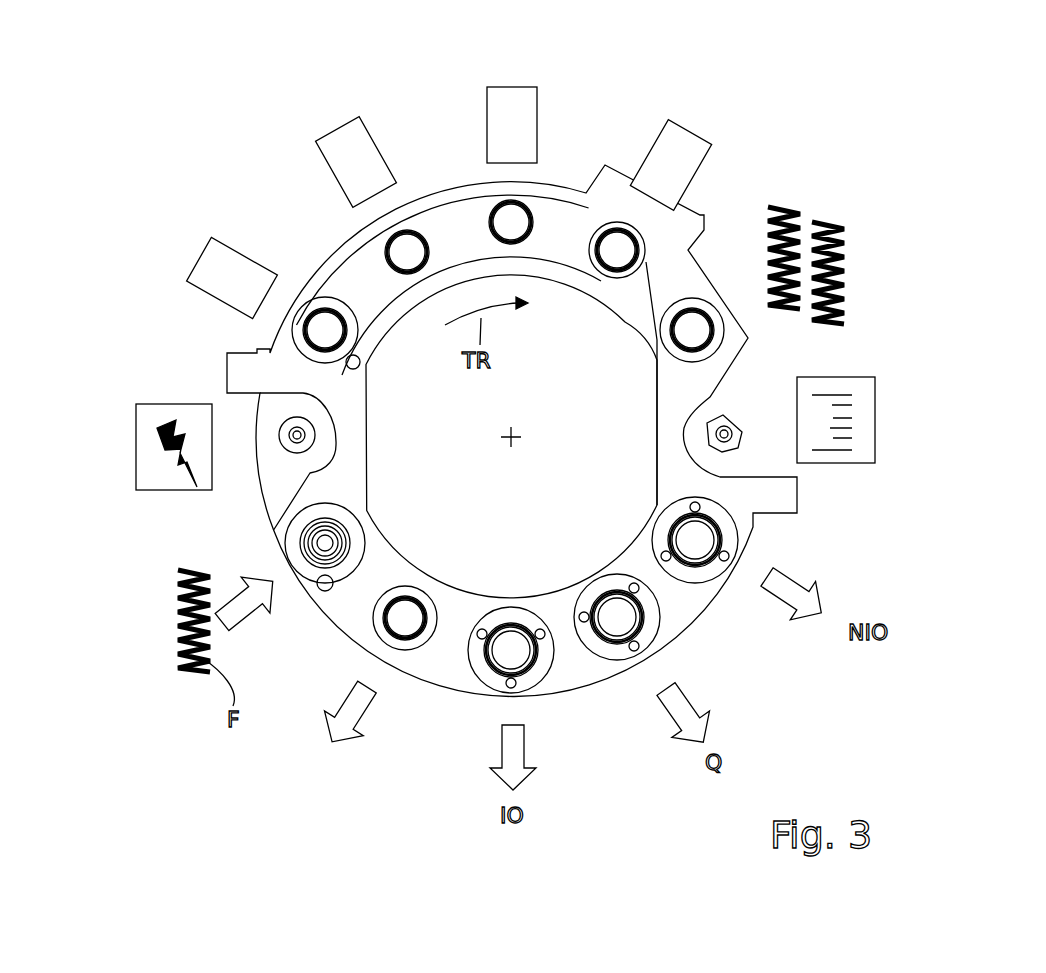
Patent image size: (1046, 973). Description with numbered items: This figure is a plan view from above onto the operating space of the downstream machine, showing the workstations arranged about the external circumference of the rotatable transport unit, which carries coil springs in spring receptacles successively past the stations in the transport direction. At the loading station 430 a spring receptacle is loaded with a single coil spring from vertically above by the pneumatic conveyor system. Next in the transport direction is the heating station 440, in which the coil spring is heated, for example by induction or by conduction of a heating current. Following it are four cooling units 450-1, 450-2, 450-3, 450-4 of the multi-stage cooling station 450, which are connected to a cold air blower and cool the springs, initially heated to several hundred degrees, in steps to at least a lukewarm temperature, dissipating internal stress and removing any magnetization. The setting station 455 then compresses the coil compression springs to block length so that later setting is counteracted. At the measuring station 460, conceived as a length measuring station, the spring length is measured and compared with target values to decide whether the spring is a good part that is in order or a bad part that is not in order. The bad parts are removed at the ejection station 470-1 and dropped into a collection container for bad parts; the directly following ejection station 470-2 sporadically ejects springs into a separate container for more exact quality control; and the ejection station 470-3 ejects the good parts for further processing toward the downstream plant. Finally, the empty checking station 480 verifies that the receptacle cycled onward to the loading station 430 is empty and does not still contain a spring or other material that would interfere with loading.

The loading station 430 is at (148, 630).
The heating station 440 is at (146, 458).
The multi-stage cooling station 450 is at (150, 176).
The first cooling unit 450-1 is at (232, 262).
The second cooling unit 450-2 is at (348, 140).
The third cooling unit 450-3 is at (515, 103).
The fourth cooling unit 450-4 is at (683, 140).
The setting station 455 is at (858, 238).
The measuring station 460 is at (883, 418).
The ejection station 470-1 is at (790, 590).
The ejection station 470-2 is at (688, 710).
The ejection station 470-3 is at (523, 755).
The empty checking station 480 is at (345, 732).